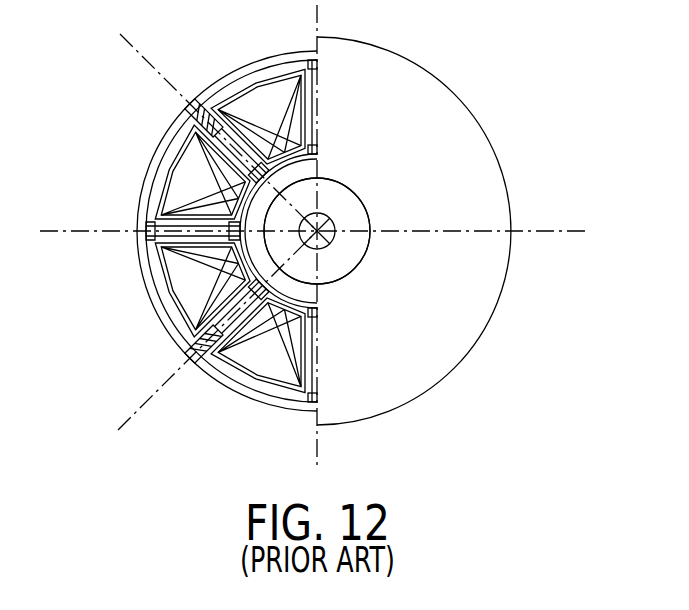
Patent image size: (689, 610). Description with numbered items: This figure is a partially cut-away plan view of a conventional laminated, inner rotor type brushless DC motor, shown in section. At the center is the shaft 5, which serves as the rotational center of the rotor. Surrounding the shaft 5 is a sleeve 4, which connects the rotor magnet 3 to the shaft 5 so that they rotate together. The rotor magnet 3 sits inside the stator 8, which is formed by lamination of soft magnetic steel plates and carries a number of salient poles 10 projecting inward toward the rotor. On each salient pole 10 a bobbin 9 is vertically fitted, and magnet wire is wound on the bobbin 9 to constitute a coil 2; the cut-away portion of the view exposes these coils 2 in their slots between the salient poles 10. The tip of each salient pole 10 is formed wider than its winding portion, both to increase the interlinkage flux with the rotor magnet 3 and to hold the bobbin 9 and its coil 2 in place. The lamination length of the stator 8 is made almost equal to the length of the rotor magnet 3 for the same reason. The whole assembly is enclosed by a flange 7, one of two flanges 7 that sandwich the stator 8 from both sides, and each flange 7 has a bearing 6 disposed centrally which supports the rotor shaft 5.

The coil 2 is at (242, 345).
The rotor magnet 3 is at (295, 172).
The sleeve 4 is at (317, 190).
The shaft 5 is at (336, 219).
The bearing 6 is at (353, 248).
The flange 7 is at (433, 358).
The stator 8 is at (150, 194).
The bobbin 9 is at (178, 318).
The salient pole 10 is at (217, 135).